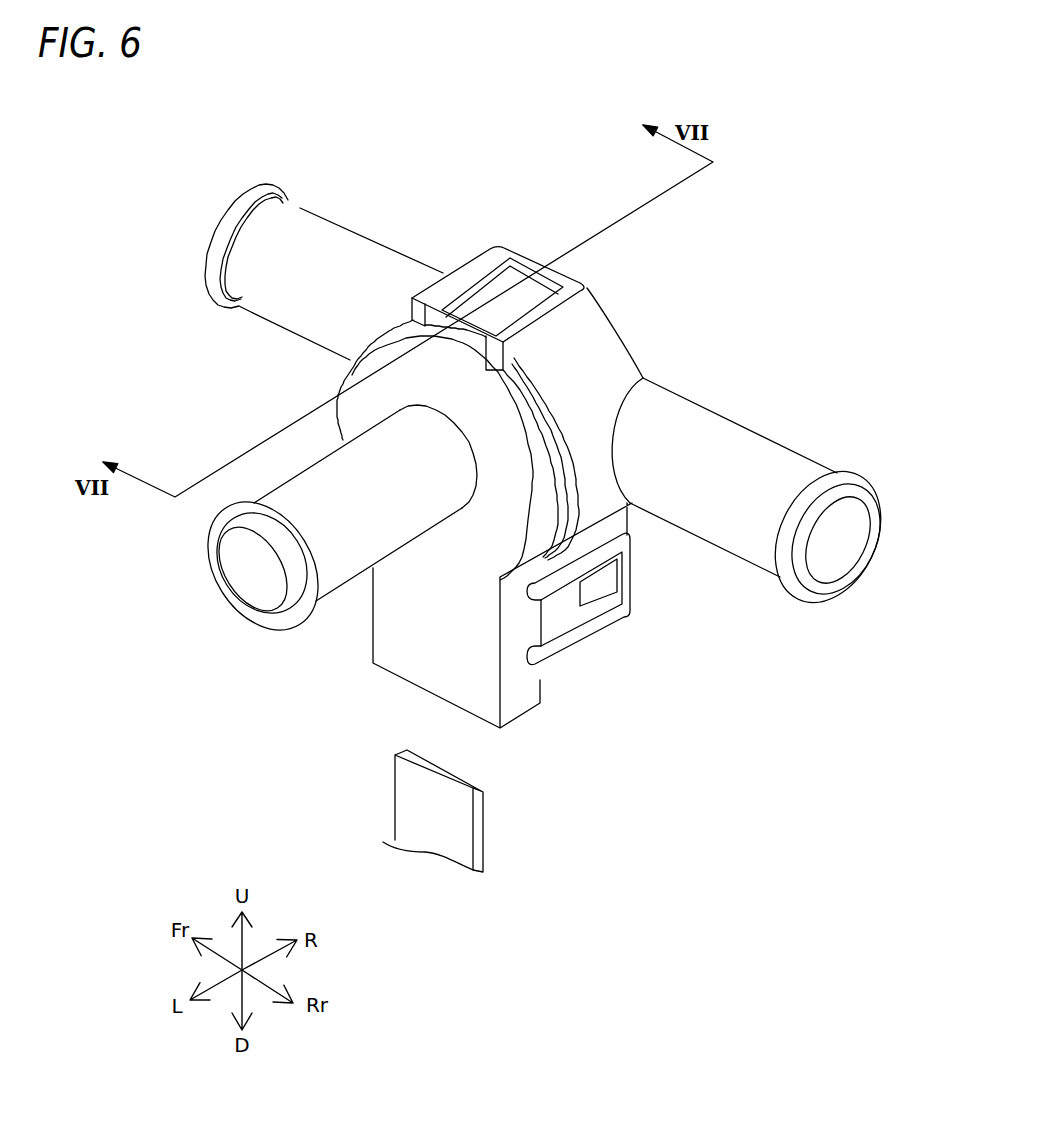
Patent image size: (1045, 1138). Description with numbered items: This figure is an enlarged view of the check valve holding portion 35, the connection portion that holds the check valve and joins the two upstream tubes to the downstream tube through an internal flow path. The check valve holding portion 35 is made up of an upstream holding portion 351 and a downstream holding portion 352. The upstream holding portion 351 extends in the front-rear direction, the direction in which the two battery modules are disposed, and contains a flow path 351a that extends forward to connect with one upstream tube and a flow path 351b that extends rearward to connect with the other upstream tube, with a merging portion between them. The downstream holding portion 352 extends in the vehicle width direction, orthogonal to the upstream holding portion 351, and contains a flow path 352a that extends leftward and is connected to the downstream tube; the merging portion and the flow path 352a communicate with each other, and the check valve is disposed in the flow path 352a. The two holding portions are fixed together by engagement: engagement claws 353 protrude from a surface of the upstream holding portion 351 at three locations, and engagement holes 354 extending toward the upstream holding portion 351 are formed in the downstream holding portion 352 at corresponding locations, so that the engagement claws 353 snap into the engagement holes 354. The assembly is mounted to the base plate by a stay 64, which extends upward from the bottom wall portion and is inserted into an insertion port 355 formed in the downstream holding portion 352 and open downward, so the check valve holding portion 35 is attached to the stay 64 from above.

The check valve holding portion 35 is at (372, 193).
The upstream holding portion 351 is at (607, 322).
The flow path 351a is at (255, 235).
The flow path 351b is at (848, 537).
The downstream holding portion 352 is at (287, 539).
The flow path 352a is at (236, 553).
The engagement claw 353 is at (478, 297).
The engagement hole 354 is at (478, 258).
The insertion port 355 is at (410, 655).
The stay 64 is at (452, 825).